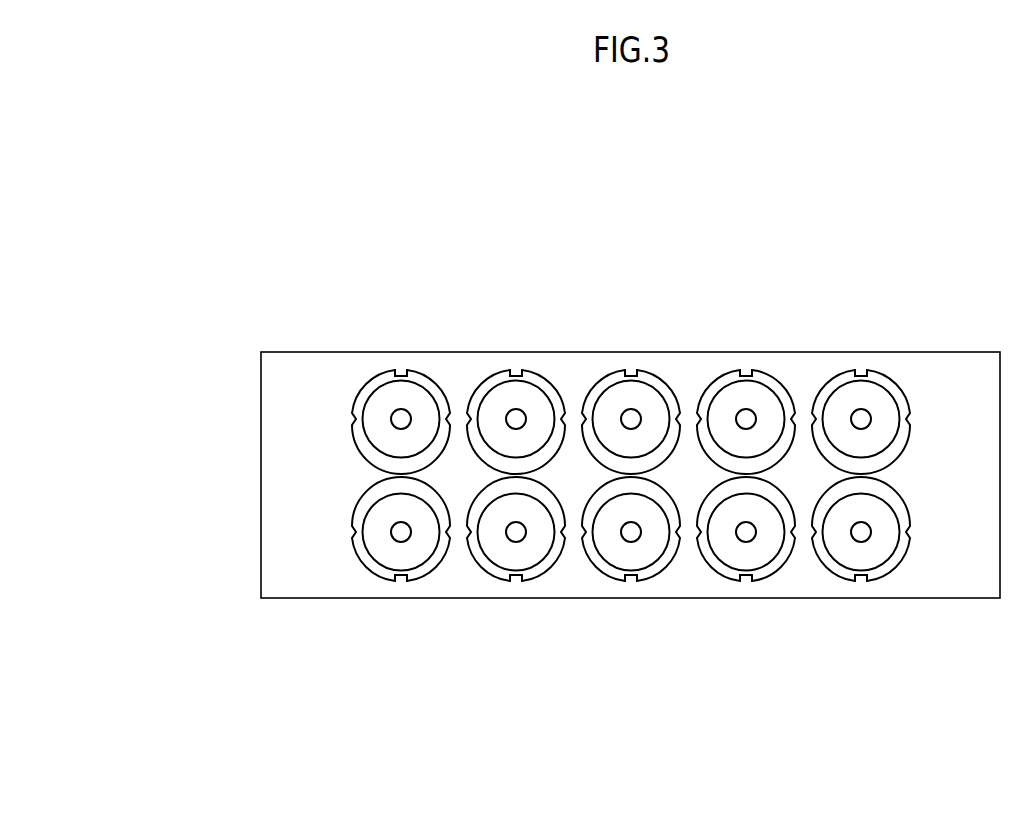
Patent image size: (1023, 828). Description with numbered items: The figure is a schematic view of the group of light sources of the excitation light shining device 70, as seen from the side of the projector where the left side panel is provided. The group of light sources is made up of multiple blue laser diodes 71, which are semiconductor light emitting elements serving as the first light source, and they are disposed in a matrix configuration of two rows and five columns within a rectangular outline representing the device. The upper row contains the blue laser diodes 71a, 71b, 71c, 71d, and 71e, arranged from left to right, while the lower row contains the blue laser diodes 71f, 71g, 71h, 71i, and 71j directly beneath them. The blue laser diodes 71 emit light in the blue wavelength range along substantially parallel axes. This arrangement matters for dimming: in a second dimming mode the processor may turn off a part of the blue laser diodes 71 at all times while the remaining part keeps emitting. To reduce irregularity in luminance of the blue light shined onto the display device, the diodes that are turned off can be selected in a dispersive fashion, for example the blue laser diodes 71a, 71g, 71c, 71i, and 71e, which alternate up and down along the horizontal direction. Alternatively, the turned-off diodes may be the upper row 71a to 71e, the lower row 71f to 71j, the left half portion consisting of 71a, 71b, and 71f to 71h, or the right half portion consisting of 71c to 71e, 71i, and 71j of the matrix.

The excitation light shining device 70 is at (222, 217).
The blue laser diode 71 is at (616, 477).
The blue laser diode 71a is at (387, 373).
The blue laser diode 71b is at (502, 373).
The blue laser diode 71c is at (617, 373).
The blue laser diode 71d is at (732, 373).
The blue laser diode 71e is at (847, 373).
The blue laser diode 71f is at (385, 578).
The blue laser diode 71g is at (500, 578).
The blue laser diode 71h is at (615, 578).
The blue laser diode 71i is at (730, 578).
The blue laser diode 71j is at (845, 578).